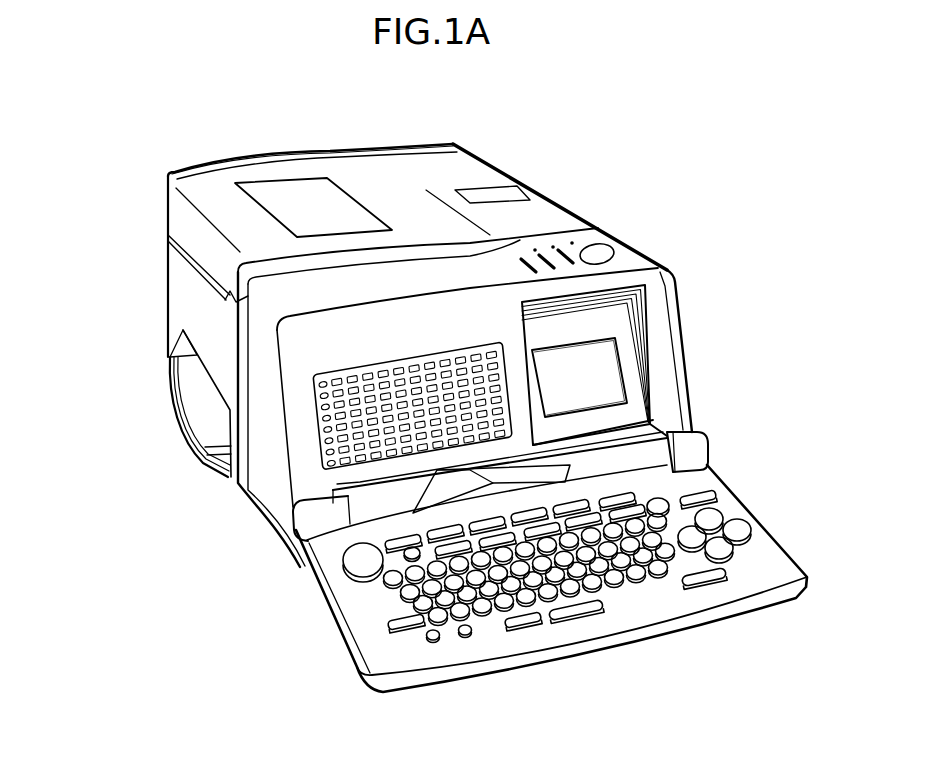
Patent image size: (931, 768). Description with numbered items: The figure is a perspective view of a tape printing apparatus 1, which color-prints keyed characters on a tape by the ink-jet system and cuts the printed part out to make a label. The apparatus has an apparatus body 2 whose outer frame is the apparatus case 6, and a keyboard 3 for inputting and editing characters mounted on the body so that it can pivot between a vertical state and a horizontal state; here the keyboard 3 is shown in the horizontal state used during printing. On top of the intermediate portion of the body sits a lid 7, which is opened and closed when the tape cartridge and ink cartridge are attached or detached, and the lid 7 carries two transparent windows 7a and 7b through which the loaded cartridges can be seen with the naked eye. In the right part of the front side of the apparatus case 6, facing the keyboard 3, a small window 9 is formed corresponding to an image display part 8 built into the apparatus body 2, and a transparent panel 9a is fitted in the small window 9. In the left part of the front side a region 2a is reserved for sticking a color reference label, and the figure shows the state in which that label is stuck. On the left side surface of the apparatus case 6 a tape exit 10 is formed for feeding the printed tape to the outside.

The tape printing apparatus 1 is at (691, 208).
The apparatus body 2 is at (545, 199).
The region capable of sticking a color reference label 2a is at (342, 473).
The keyboard 3 is at (364, 671).
The apparatus case 6 is at (419, 146).
The lid 7 is at (198, 227).
The transparent window 7a is at (510, 192).
The transparent window 7b is at (293, 188).
The image display part 8 is at (603, 323).
The small window 9 is at (626, 383).
The transparent panel 9a is at (583, 373).
The tape exit 10 is at (212, 402).